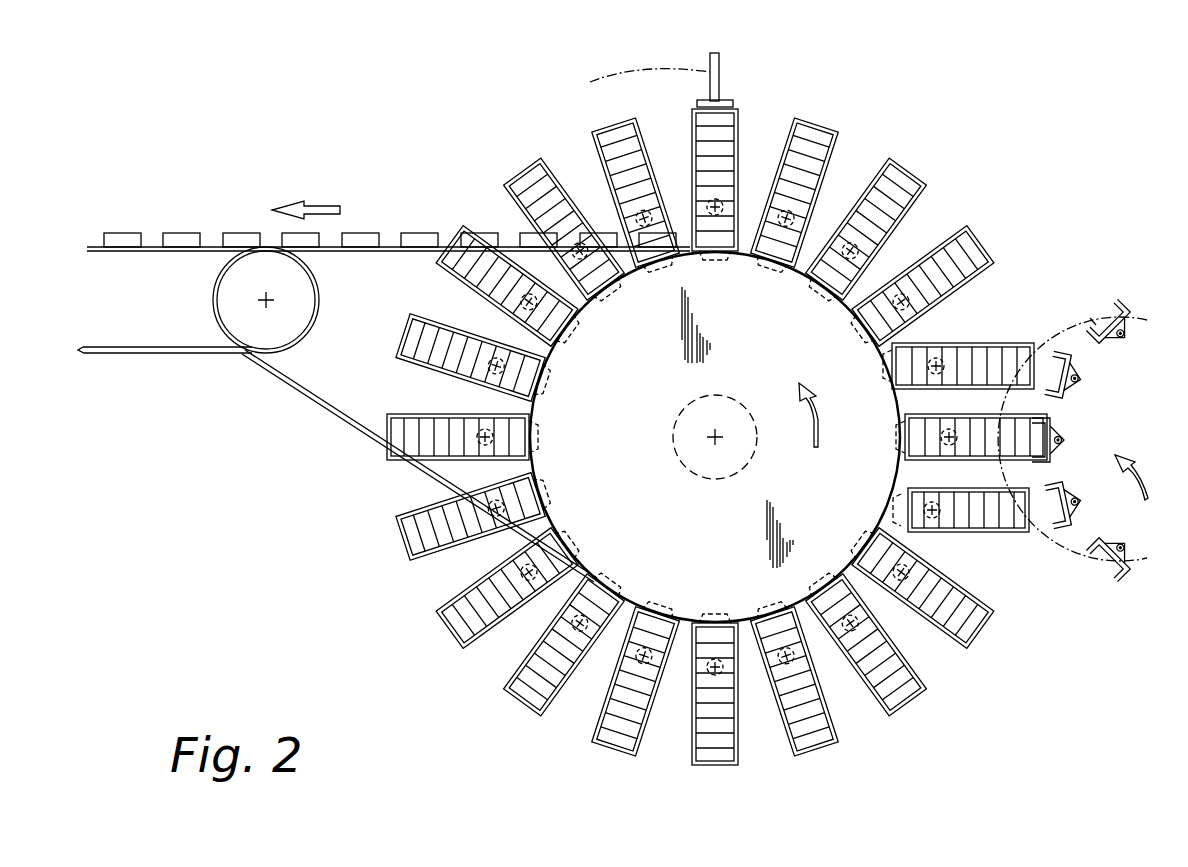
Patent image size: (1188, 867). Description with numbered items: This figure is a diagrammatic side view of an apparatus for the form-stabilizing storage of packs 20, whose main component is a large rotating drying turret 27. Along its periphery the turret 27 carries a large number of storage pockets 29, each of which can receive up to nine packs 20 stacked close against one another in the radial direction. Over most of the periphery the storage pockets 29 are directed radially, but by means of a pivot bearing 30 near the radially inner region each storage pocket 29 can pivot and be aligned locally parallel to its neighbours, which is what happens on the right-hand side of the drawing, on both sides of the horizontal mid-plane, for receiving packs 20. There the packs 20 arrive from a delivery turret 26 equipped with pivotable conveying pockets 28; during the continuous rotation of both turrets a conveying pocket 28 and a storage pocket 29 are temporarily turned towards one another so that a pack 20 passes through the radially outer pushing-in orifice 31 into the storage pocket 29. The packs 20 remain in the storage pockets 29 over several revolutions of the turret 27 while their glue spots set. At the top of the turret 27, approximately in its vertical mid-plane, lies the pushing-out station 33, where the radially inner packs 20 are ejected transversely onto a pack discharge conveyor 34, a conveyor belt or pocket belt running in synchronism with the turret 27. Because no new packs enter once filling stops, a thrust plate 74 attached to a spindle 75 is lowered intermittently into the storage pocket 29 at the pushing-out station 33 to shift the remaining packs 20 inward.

The packs 20 is at (238, 237).
The delivery turret 26 is at (1140, 285).
The turret 27 is at (430, 594).
The conveying pockets 28 is at (1104, 322).
The storage pockets 29 is at (530, 165).
The pivot bearing 30 is at (943, 340).
The pushing-in orifice 31 is at (1032, 362).
The pushing-out station 33 is at (754, 168).
The pack discharge conveyor 34 is at (390, 225).
The thrust plate 74 is at (697, 102).
The spindle 75 is at (635, 87).